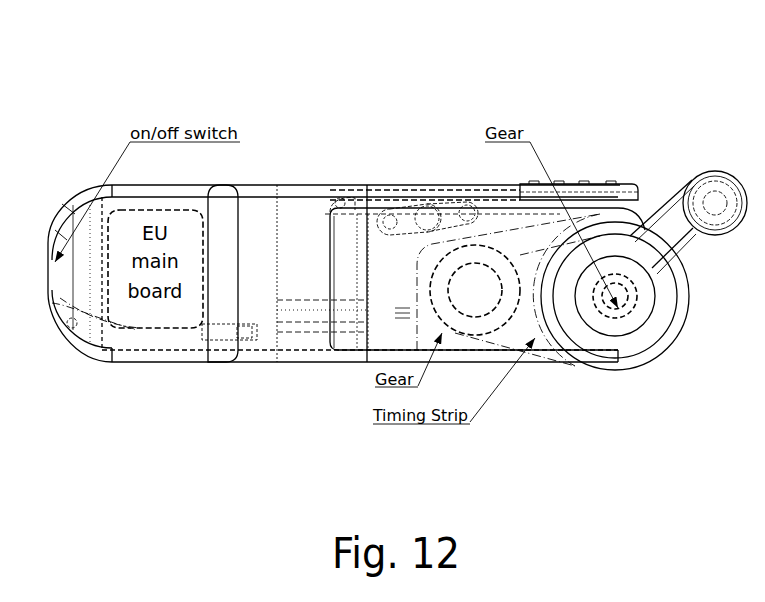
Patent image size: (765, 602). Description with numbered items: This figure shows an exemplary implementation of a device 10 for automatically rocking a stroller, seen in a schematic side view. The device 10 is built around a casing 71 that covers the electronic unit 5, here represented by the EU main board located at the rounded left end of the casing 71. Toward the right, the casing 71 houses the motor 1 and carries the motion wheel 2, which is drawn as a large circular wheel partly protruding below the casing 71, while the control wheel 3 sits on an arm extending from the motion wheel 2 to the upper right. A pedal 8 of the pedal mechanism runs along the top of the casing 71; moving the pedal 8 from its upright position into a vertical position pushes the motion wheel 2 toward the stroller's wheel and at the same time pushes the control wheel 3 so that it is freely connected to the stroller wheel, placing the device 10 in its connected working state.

The device 10 is at (593, 82).
The motor 1 is at (482, 256).
The motion wheel 2 is at (652, 323).
The control wheel 3 is at (707, 190).
The electronic unit 5 is at (133, 330).
The pedal 8 is at (403, 190).
The casing 71 is at (262, 187).